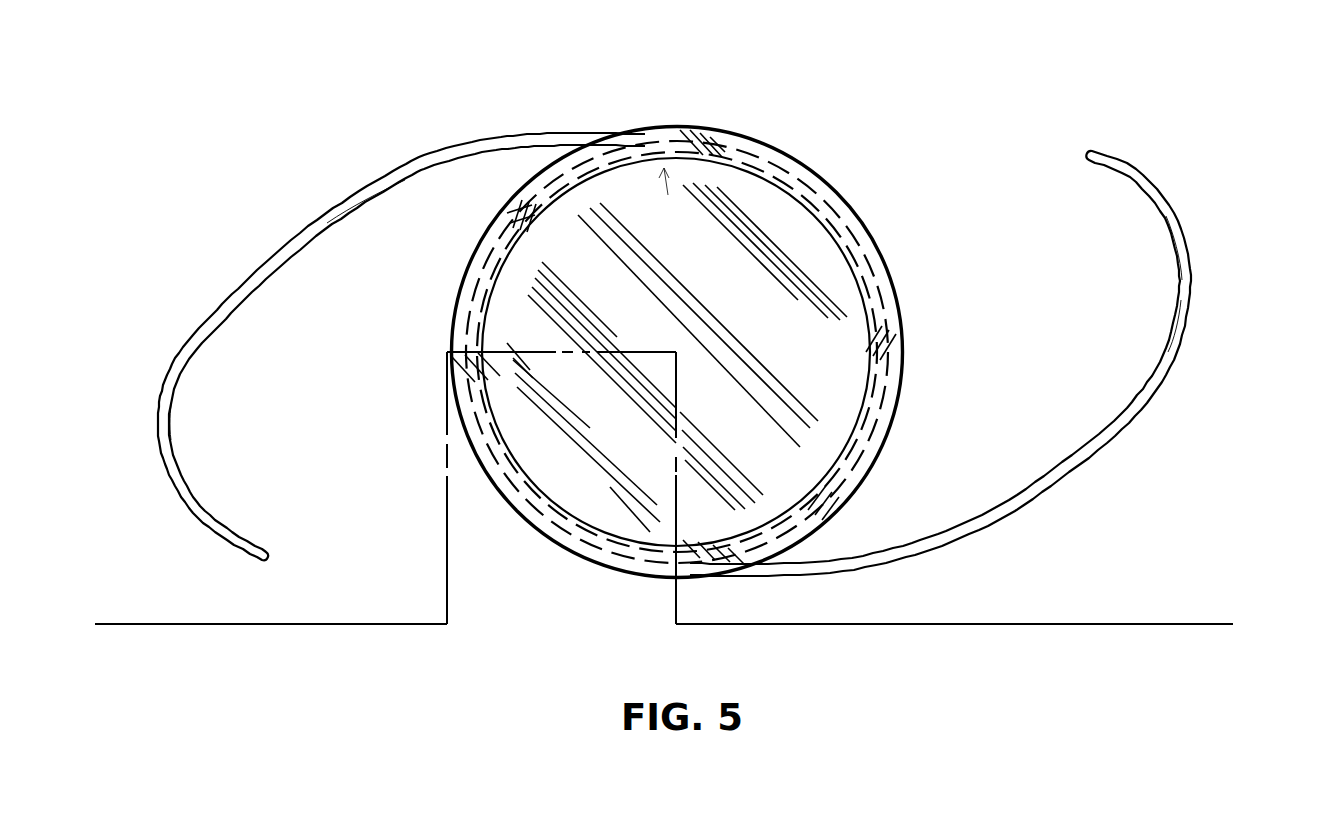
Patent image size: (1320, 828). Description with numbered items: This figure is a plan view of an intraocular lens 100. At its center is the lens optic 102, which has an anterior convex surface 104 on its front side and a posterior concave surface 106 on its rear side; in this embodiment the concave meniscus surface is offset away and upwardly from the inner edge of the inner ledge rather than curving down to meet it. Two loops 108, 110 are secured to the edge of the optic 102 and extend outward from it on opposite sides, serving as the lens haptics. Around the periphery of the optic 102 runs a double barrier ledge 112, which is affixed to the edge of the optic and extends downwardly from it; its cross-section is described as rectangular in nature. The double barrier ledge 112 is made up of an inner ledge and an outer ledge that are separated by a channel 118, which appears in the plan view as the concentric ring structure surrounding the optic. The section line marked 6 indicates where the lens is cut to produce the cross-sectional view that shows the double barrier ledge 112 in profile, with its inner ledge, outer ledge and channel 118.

The intraocular lens 100 is at (737, 307).
The lens optic 102 is at (835, 193).
The anterior convex surface 104 is at (832, 278).
The posterior concave surface 106 is at (843, 326).
The loop 108 is at (196, 505).
The loop 110 is at (1148, 206).
The double barrier ledge 112 is at (882, 374).
The channel 118 is at (867, 438).
The section line 6- 6 is at (1225, 555).